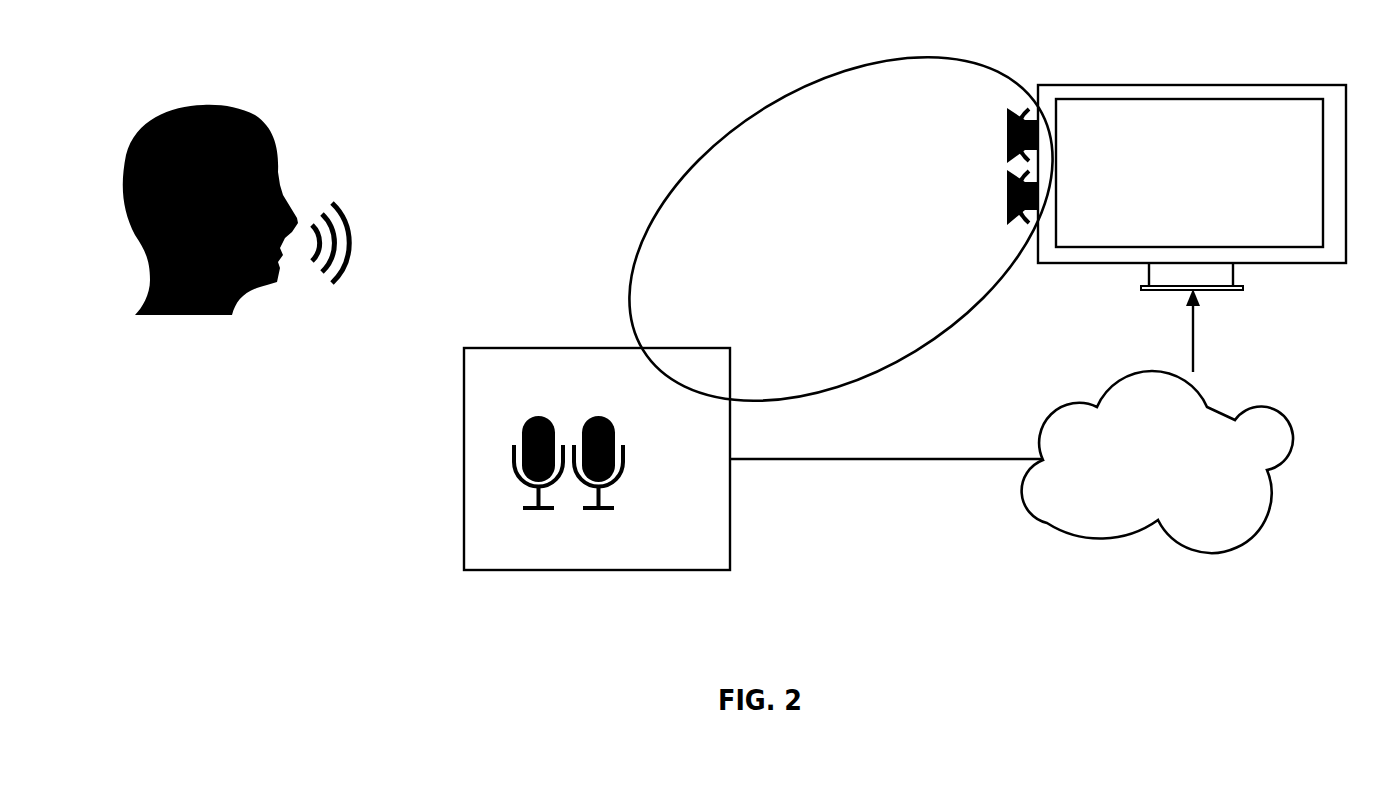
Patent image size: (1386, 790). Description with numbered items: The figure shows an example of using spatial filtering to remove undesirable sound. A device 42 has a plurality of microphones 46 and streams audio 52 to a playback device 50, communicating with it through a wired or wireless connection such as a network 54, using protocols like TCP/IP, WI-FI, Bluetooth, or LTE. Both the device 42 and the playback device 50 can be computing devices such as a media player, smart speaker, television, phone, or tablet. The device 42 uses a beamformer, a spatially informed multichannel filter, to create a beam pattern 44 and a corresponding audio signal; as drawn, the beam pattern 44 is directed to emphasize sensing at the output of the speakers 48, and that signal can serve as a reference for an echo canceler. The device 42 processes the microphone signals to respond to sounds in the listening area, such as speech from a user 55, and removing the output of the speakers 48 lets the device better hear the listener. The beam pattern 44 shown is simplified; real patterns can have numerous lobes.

The device 42 is at (597, 459).
The beam pattern 44 is at (840, 236).
The microphones 46 is at (582, 488).
The speakers 48 is at (1060, 126).
The playback device 50 is at (1192, 187).
The audio 52 is at (965, 374).
The network 54 is at (1157, 462).
The user 55 is at (236, 186).